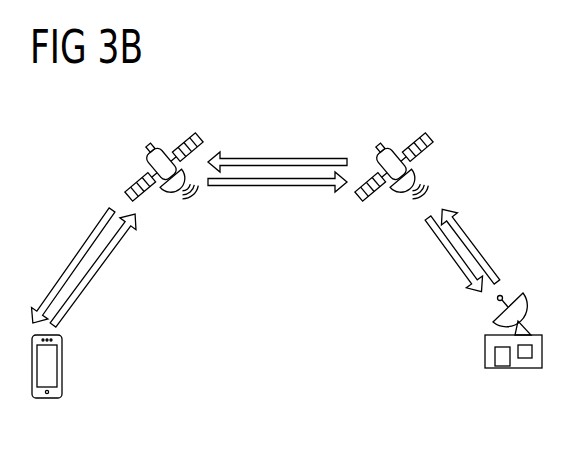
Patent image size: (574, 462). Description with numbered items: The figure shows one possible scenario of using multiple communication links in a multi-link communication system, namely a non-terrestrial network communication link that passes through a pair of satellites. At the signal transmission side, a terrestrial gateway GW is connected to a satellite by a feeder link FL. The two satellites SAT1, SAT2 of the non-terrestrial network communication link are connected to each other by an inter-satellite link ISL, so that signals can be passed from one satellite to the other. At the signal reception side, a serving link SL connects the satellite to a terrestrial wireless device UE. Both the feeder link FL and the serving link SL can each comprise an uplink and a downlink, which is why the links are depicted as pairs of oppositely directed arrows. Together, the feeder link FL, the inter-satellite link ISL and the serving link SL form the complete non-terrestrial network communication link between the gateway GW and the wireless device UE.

The satellite SAT1 is at (191, 131).
The satellite SAT2 is at (421, 131).
The inter-satellite link ISL is at (272, 186).
The serving link SL is at (75, 258).
The feeder link FL is at (477, 245).
The terrestrial wireless device UE is at (62, 363).
The terrestrial gateway GW is at (513, 370).